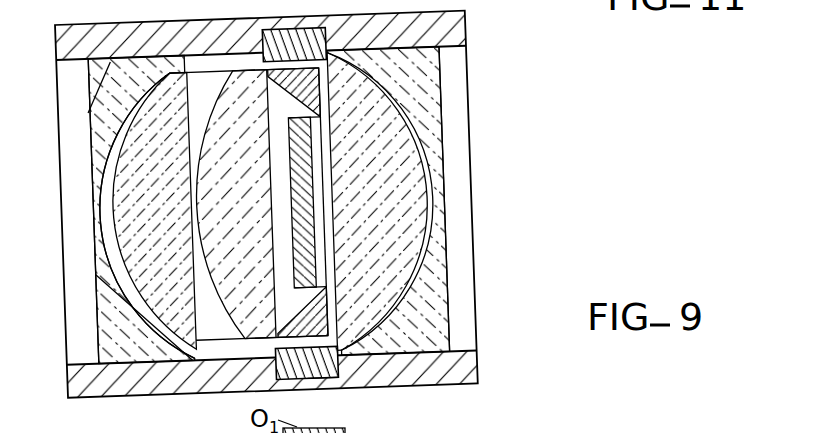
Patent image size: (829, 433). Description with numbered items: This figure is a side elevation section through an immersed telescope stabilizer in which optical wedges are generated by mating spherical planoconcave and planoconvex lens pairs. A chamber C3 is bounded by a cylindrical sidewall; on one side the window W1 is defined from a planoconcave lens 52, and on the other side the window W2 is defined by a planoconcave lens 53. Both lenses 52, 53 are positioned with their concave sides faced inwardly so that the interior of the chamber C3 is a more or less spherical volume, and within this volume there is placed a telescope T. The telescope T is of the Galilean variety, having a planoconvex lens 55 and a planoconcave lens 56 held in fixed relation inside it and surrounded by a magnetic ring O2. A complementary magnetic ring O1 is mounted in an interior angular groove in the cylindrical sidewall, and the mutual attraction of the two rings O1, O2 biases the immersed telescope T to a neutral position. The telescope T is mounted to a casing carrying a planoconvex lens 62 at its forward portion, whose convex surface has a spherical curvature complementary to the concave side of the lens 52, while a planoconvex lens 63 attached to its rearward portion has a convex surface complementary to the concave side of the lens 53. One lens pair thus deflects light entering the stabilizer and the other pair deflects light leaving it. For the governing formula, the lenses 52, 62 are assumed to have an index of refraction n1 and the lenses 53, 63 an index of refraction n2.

The planoconcave lens 53 is at (442, 107).
The window W1 is at (87, 115).
The window W2 is at (450, 283).
The planoconcave lens 52 is at (110, 295).
The planoconvex lens 62 is at (163, 178).
The planoconvex lens 55 is at (247, 176).
The planoconcave lens 56 is at (297, 232).
The planoconvex lens 63 is at (390, 171).
The index of refraction n1 is at (146, 352).
The index of refraction n2 is at (392, 273).
The chamber C3 is at (167, 78).
The magnetic ring O1 is at (338, 376).
The magnetic ring O2 is at (328, 51).
The telescope T is at (291, 372).